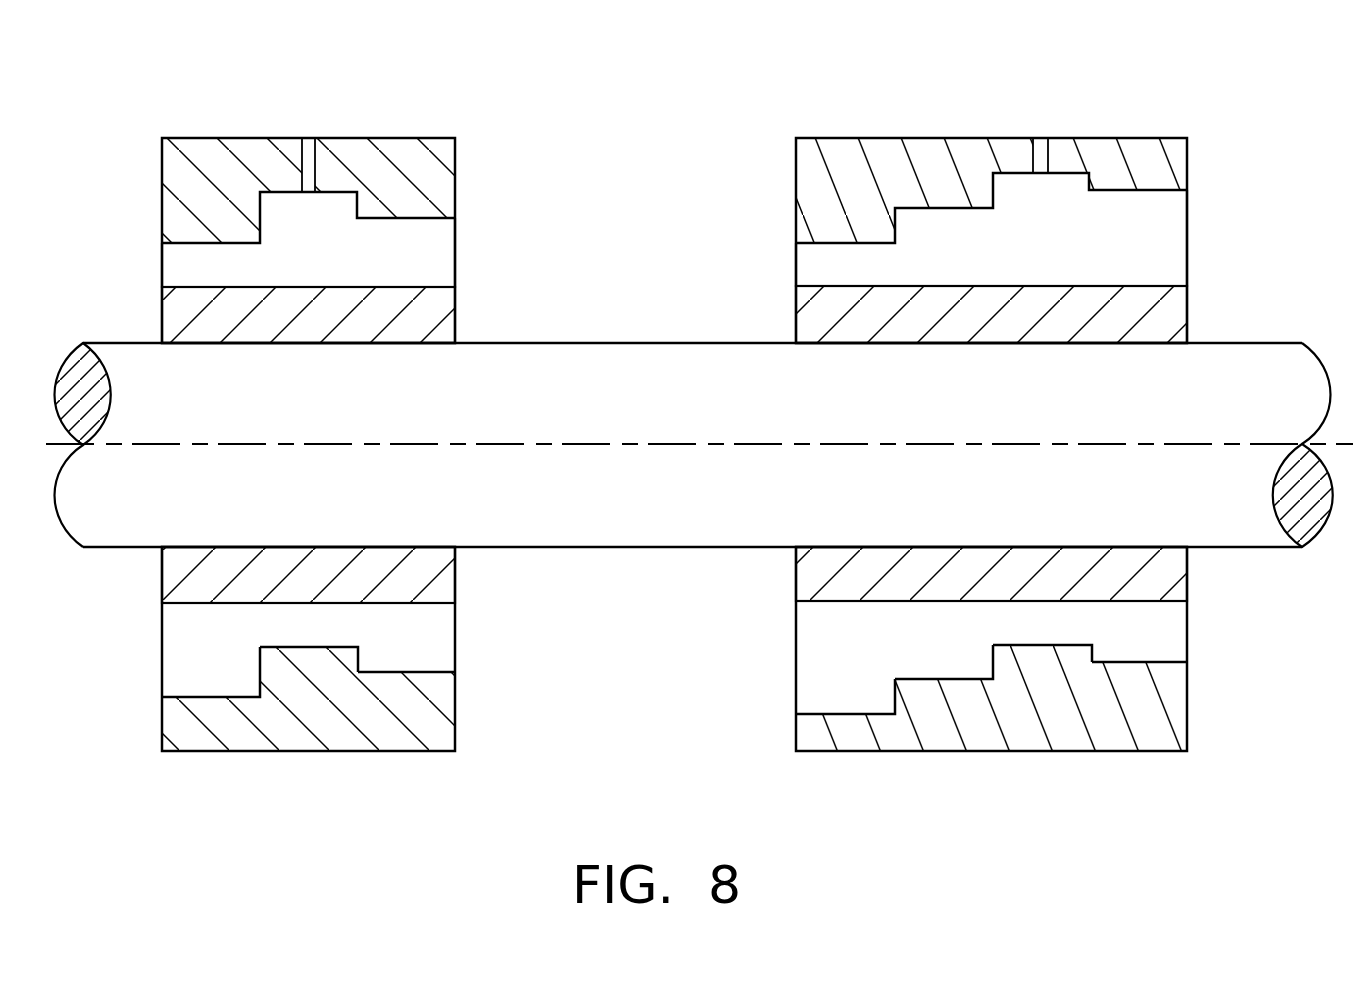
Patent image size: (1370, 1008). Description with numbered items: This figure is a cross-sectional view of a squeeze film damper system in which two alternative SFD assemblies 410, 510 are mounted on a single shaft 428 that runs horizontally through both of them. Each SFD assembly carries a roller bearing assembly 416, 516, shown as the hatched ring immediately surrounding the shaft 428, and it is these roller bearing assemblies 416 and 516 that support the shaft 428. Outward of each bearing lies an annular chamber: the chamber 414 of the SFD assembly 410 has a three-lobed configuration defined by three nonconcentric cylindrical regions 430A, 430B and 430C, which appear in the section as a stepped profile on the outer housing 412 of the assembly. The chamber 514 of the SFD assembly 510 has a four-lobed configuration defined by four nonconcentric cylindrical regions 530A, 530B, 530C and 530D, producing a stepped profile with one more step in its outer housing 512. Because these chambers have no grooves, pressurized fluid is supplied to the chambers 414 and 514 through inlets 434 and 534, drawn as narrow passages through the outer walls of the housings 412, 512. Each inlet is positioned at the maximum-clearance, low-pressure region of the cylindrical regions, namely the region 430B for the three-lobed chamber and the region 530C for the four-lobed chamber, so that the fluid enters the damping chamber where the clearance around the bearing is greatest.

The squeeze film damper assembly 410 is at (170, 115).
The seal housing 412 is at (438, 138).
The chamber 414 is at (180, 262).
The roller bearing assembly 416 is at (160, 318).
The shaft 428 is at (1275, 360).
The nonconcentric cylindrical region 430A is at (190, 697).
The nonconcentric cylindrical region 430B is at (328, 645).
The nonconcentric cylindrical region 430C is at (418, 670).
The inlet 434 is at (308, 138).
The squeeze film damper assembly 510 is at (865, 113).
The seal housing 512 is at (1155, 167).
The chamber 514 is at (1163, 243).
The roller bearing assembly 516 is at (1190, 302).
The nonconcentric cylindrical region 530A is at (843, 713).
The nonconcentric cylindrical region 530B is at (927, 678).
The nonconcentric cylindrical region 530C is at (1038, 643).
The nonconcentric cylindrical region 530D is at (1172, 660).
The inlet 534 is at (1037, 150).